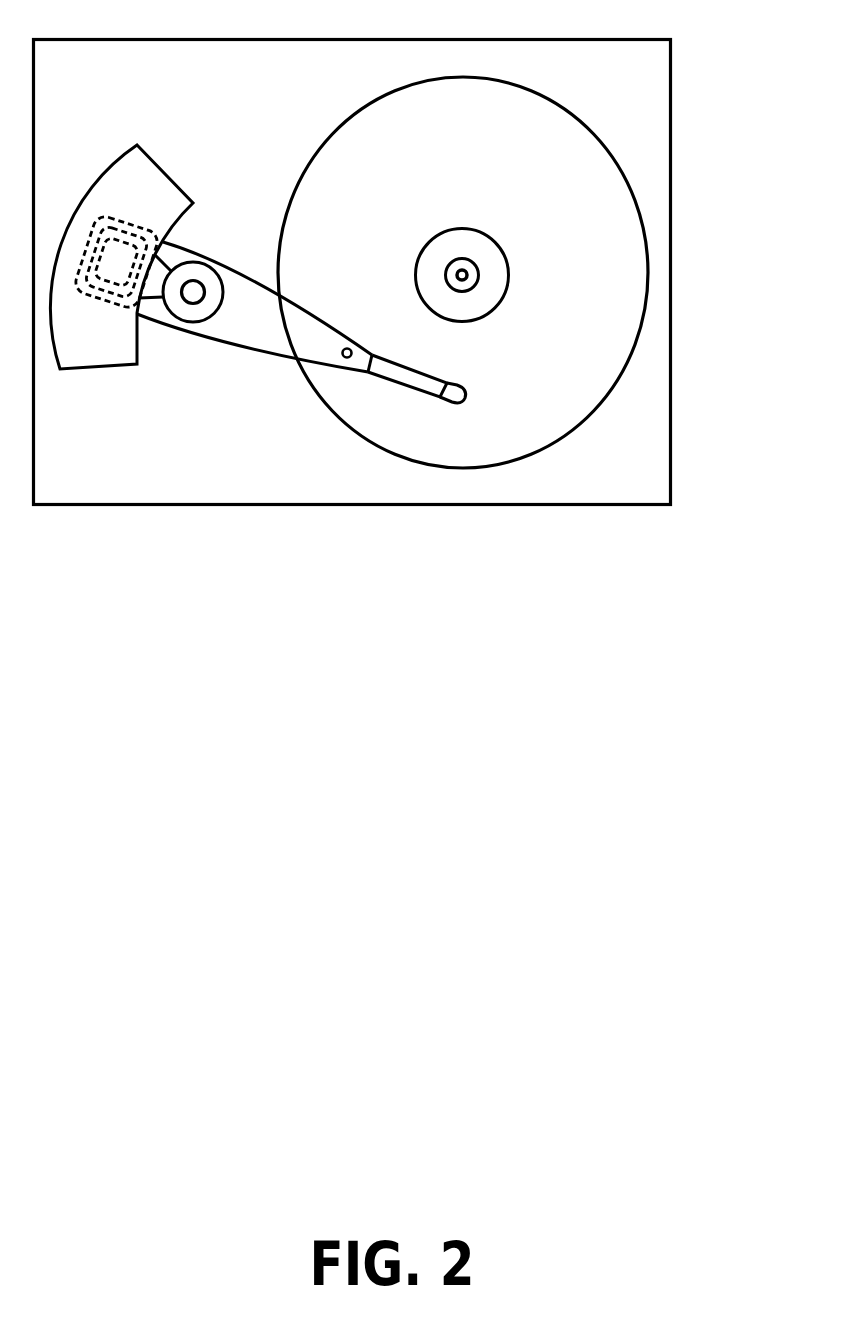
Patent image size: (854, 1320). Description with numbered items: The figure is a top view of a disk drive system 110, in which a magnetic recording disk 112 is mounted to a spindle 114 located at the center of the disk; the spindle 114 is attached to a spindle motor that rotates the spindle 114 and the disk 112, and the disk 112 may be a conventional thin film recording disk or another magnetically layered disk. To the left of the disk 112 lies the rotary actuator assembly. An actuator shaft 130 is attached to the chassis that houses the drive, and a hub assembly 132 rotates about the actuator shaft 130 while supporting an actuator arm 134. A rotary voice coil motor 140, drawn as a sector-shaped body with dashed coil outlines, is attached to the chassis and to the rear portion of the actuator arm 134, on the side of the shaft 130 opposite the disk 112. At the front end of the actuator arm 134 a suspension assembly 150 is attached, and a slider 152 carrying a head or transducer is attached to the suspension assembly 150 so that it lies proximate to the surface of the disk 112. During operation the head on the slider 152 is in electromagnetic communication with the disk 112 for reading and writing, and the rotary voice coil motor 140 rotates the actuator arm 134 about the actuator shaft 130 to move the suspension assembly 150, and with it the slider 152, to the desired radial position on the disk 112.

The disk drive system 110 is at (702, 160).
The magnetic recording disk 112 is at (446, 164).
The spindle 114 is at (465, 258).
The actuator shaft 130 is at (187, 303).
The hub assembly 132 is at (256, 297).
The actuator arm 134 is at (293, 317).
The rotary voice coil motor 140 is at (140, 184).
The suspension assembly 150 is at (390, 372).
The slider 152 is at (467, 402).